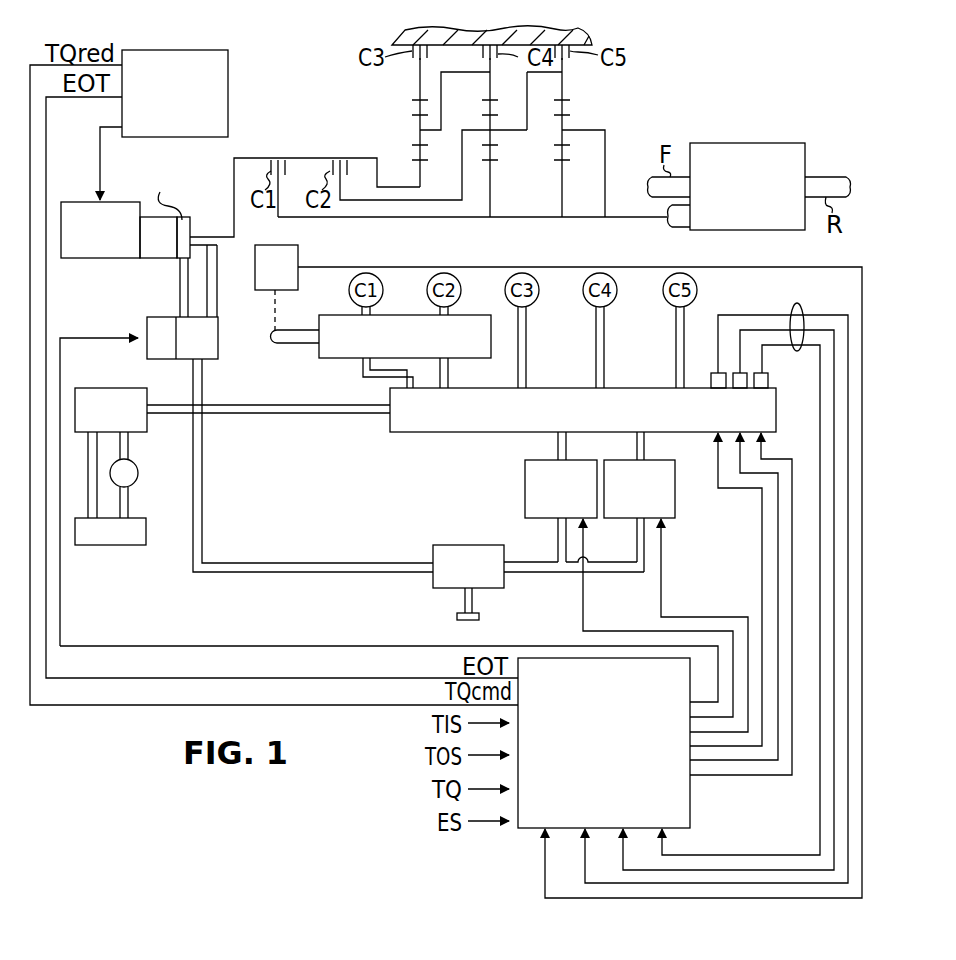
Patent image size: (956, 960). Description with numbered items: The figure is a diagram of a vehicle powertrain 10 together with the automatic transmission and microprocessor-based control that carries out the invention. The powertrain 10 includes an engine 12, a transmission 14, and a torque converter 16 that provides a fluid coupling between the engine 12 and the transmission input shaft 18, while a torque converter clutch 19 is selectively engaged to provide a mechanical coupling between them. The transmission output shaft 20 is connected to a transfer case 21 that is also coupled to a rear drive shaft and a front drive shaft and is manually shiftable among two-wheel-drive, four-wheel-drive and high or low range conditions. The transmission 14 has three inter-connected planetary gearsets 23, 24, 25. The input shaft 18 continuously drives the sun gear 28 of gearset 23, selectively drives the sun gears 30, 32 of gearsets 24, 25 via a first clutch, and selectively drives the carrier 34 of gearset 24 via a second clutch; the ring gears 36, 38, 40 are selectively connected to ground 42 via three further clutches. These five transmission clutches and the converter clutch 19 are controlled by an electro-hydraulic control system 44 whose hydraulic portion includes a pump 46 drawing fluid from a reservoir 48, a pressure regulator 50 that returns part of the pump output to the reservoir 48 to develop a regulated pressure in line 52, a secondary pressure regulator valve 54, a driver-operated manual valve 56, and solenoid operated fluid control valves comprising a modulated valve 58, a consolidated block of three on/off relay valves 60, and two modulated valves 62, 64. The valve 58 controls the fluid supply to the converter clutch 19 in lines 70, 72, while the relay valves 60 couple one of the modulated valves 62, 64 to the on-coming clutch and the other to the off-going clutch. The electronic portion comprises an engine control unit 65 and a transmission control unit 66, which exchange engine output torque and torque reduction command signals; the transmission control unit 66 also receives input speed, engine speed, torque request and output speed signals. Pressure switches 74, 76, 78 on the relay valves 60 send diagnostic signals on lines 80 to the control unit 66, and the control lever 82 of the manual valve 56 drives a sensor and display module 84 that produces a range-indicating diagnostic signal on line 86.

The vehicle powertrain 10 is at (288, 68).
The engine 12 is at (92, 258).
The transmission 14 is at (381, 127).
The torque converter 16 is at (163, 258).
The transmission input shaft 18 is at (234, 170).
The torque converter clutch 19 is at (190, 223).
The transmission output shaft 20 is at (606, 213).
The transfer case 21 is at (736, 143).
The planetary gearset 23 is at (434, 138).
The planetary gearset 24 is at (504, 138).
The planetary gearset 25 is at (574, 117).
The sun gear 28 is at (418, 179).
The sun gear 30 is at (494, 213).
The sun gear 32 is at (560, 213).
The carrier 34 is at (468, 130).
The ring gear 36 is at (419, 71).
The ring gear 38 is at (483, 54).
The ring gear 40 is at (563, 65).
The ground 42 is at (587, 30).
The electro-hydraulic control system 44 is at (882, 310).
The pump 46 is at (138, 473).
The reservoir 48 is at (146, 533).
The pressure regulator 50 is at (111, 388).
The line 52 is at (293, 413).
The secondary pressure regulator valve 54 is at (433, 580).
The manual valve 56 is at (351, 358).
The fluid control valve 58 is at (219, 343).
The relay valves 60 is at (413, 432).
The modulated valve 62 is at (525, 505).
The modulated valve 64 is at (675, 505).
The engine control unit 65 is at (228, 93).
The transmission control unit 66 is at (532, 830).
The line 70 is at (180, 303).
The line 72 is at (217, 289).
The pressure switch 74 is at (713, 373).
The pressure switch 76 is at (755, 388).
The pressure switch 78 is at (770, 380).
The lines 80 is at (800, 312).
The control lever 82 is at (290, 346).
The sensor and display module 84 is at (300, 250).
The line 86 is at (743, 267).